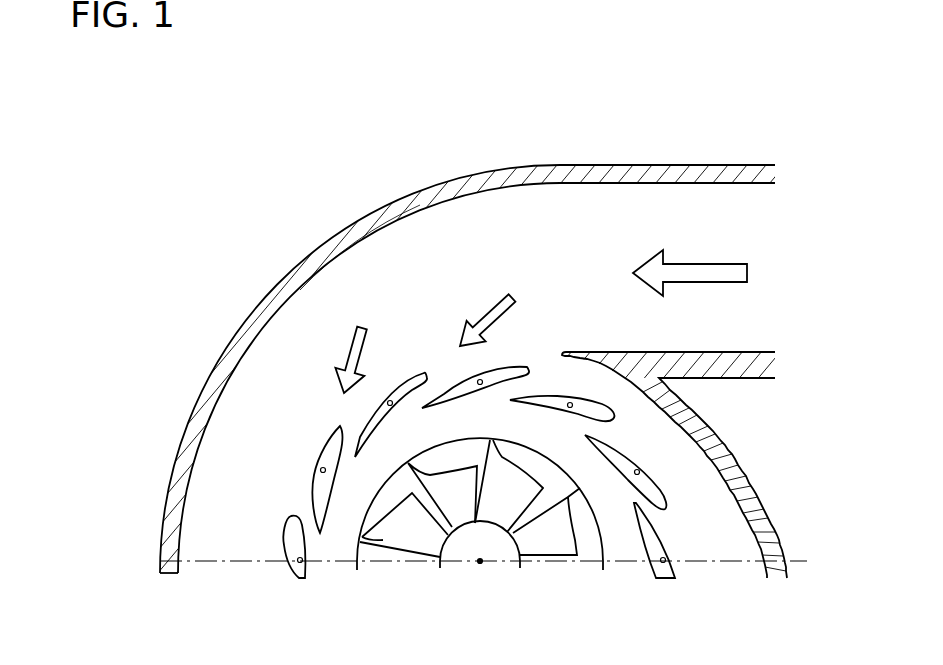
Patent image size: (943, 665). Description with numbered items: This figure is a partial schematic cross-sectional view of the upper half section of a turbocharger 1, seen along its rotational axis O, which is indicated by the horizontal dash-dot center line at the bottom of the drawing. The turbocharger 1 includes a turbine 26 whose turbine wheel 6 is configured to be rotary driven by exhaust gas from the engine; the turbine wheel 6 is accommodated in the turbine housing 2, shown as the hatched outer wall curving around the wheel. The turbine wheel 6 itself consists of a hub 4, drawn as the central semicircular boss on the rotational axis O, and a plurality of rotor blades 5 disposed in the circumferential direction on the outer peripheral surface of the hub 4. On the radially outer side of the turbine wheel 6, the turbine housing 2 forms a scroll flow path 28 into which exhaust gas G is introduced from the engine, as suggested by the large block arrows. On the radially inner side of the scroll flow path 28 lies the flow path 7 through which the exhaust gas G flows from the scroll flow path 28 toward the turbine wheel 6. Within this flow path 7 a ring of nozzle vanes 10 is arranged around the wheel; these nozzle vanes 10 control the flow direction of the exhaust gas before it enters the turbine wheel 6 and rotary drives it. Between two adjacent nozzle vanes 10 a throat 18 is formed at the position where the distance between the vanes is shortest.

The turbocharger 1 is at (148, 122).
The turbine housing 2 is at (628, 165).
The turbine 26 is at (739, 154).
The scroll flow path 28 is at (378, 260).
The nozzle vane 10 is at (665, 484).
The throat 18 is at (613, 433).
The flow path 7 is at (302, 498).
The exhaust gas G is at (512, 296).
The turbine wheel 6 is at (456, 571).
The hub 4 is at (485, 542).
The rotational axis O is at (480, 562).
The rotor blade 5 is at (545, 538).